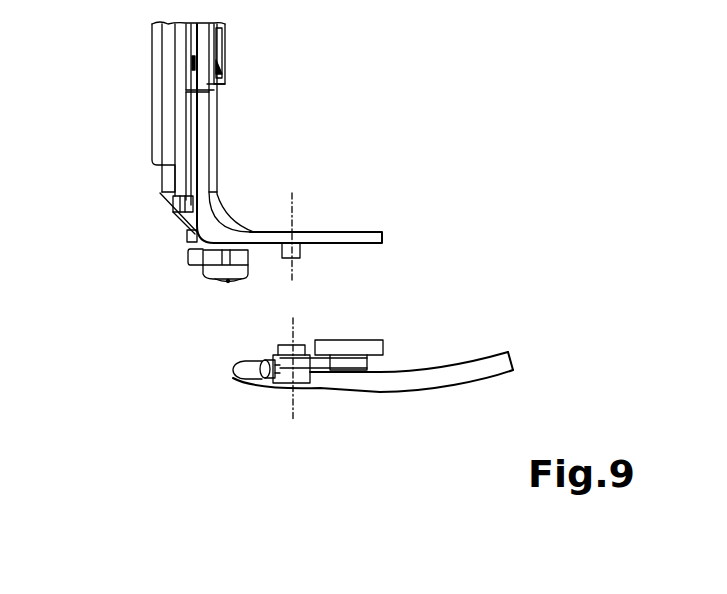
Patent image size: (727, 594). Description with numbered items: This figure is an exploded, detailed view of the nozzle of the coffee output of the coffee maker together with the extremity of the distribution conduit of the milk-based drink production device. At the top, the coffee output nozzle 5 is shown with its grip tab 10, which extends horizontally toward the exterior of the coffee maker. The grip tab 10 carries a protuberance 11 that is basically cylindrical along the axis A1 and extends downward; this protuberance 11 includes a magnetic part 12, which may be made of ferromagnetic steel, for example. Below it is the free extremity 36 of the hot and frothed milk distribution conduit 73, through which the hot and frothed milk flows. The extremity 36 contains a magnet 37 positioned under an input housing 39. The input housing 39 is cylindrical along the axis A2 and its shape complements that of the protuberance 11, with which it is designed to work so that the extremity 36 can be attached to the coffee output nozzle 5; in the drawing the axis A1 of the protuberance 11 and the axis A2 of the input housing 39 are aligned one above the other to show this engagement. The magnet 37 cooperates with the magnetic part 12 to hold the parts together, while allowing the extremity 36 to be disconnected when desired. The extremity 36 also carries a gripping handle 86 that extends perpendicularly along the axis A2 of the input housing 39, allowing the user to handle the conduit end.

The coffee output nozzle 5 is at (213, 263).
The grip tab 10 is at (345, 240).
The protuberance 11 is at (300, 257).
The magnetic part 12 is at (300, 235).
The free extremity 36 is at (292, 370).
The magnet 37 is at (263, 367).
The input housing 39 is at (287, 344).
The hot and frothed milk distribution conduit 73 is at (412, 384).
The gripping handle 86 is at (383, 343).
The axis A1 is at (292, 193).
The axis A2 is at (293, 418).